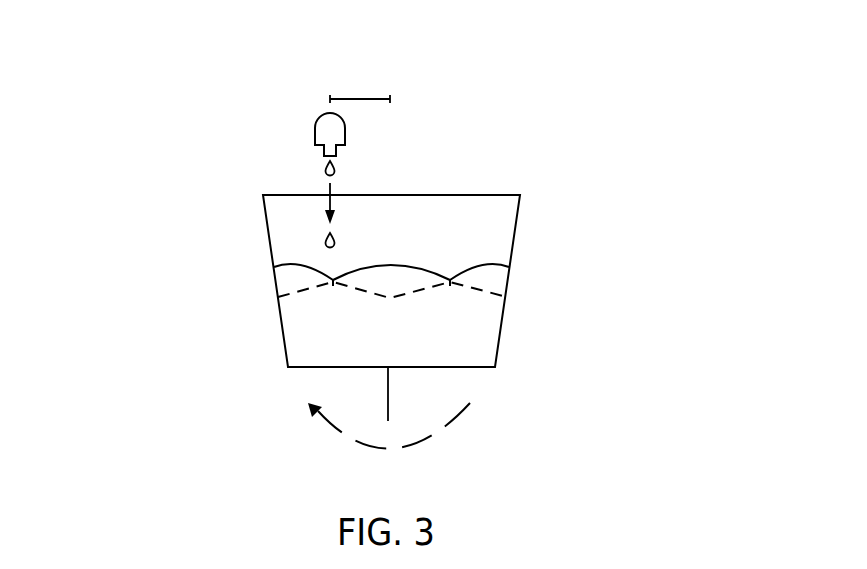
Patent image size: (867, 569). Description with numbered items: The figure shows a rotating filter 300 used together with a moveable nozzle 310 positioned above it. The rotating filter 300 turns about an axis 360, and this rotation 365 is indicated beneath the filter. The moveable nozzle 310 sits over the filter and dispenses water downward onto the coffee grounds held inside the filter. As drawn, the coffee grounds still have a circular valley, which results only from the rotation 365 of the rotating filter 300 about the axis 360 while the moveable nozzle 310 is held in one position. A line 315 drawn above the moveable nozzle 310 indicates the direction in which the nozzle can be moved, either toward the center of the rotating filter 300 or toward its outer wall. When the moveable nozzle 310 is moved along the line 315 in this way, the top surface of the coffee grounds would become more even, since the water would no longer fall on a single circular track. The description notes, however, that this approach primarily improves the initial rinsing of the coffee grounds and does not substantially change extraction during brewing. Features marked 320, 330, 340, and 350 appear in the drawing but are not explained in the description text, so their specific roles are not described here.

The rotating filter 300 is at (200, 268).
The moveable nozzle 310 is at (315, 138).
The line 315 is at (375, 97).
The liquid surface 320 is at (447, 265).
The wave cusps 330 is at (507, 298).
The container 340 is at (317, 348).
The liquid level 350 is at (282, 281).
The axis 360 is at (388, 402).
The rotation 365 is at (447, 425).